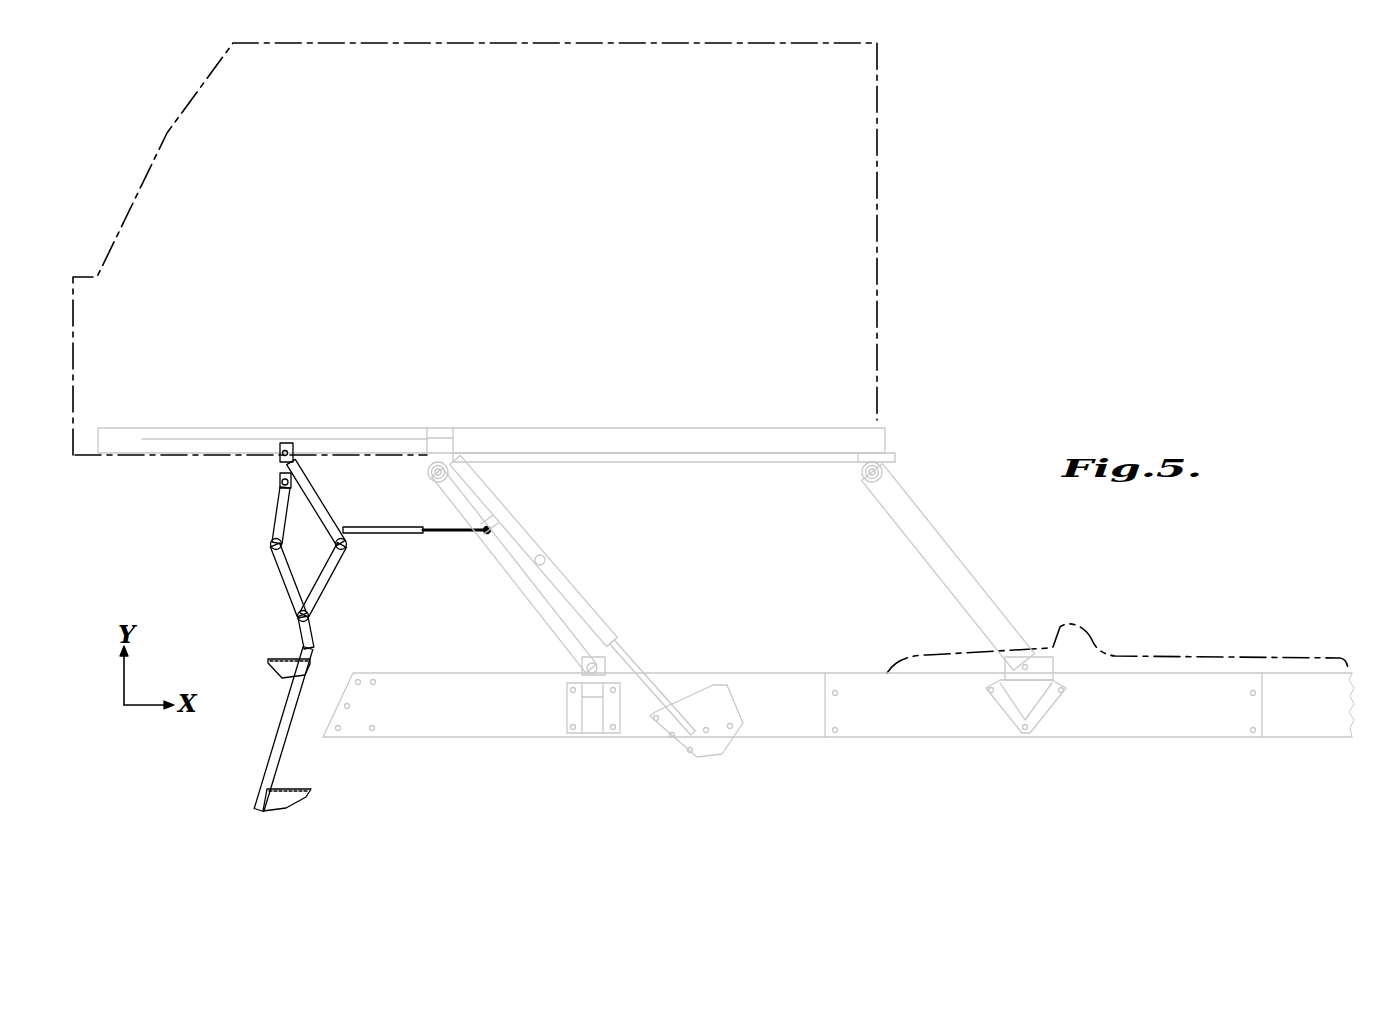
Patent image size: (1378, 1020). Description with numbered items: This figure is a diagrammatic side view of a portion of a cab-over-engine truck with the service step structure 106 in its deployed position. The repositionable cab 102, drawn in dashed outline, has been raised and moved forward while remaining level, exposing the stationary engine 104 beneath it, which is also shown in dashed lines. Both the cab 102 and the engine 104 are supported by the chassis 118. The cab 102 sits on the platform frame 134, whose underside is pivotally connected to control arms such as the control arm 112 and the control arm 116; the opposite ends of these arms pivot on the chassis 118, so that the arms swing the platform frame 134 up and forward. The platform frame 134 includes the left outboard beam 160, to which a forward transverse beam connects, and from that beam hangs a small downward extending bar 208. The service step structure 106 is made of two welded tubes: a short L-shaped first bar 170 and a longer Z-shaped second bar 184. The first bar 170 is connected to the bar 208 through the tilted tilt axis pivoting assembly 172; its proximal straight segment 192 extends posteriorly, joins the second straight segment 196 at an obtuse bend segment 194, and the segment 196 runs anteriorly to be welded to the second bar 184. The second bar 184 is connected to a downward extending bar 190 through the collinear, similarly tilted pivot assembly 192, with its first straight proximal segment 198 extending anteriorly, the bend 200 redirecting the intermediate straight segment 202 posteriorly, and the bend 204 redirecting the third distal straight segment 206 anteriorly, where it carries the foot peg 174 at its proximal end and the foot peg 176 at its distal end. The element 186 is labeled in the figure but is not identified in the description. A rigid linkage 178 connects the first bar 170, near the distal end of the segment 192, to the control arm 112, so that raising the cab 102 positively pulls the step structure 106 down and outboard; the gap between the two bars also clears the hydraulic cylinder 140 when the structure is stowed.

The cab 102 is at (877, 195).
The engine 104 is at (1093, 640).
The service step structure 106 is at (286, 611).
The control arm 112 is at (537, 583).
The control arm 116 is at (935, 540).
The chassis 118 is at (760, 740).
The platform frame 134 is at (660, 420).
The hydraulic cylinder 140 is at (595, 632).
The left outboard beam 160 is at (221, 428).
The first bar 170 is at (344, 516).
The tilt axis pivoting assembly 172 is at (288, 442).
The foot peg 174 is at (285, 660).
The foot peg 176 is at (288, 800).
The rigid linkage 178 is at (422, 538).
The second bar 184 is at (280, 461).
The pivot joint 186 is at (318, 620).
The downward extending bar 190 is at (282, 466).
The tilt axis pivoting assembly 192 is at (276, 479).
The bend segment 194 is at (350, 548).
The second straight segment 196 is at (325, 590).
The first straight proximal segment 198 is at (278, 510).
The bend 200 is at (268, 543).
The second intermediate straight segment 202 is at (283, 590).
The bend 204 is at (318, 650).
The third distal straight segment 206 is at (277, 730).
The downward extending bar 208 is at (293, 448).